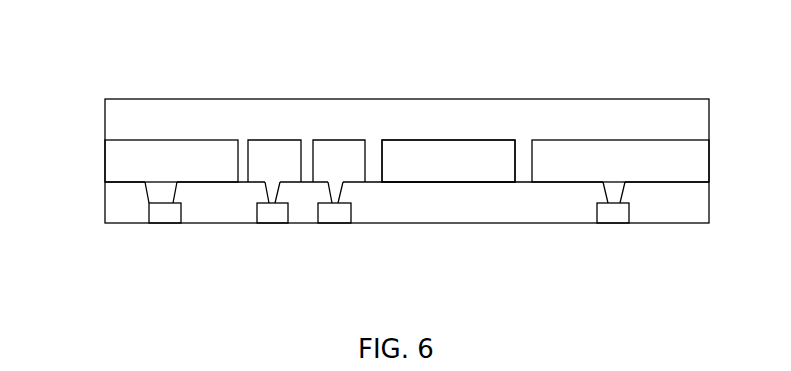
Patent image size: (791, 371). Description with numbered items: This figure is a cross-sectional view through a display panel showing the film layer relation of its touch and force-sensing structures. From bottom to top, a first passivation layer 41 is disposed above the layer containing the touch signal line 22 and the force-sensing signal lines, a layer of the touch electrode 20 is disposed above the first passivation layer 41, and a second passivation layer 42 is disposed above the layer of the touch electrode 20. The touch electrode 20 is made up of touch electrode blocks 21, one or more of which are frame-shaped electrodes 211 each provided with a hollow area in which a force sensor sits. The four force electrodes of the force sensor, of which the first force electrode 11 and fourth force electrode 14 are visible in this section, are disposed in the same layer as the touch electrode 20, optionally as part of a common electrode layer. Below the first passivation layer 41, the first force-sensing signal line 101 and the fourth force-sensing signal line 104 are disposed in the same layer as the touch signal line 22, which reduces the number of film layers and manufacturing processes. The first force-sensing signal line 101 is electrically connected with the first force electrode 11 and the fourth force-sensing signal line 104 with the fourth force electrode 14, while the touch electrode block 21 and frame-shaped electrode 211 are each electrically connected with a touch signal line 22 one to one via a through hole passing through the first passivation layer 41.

The second passivation layer 42 is at (668, 122).
The first passivation layer 41 is at (683, 213).
The touch electrode 20 is at (535, 99).
The frame-shaped electrode 211 is at (125, 165).
The touch electrode block 21 is at (622, 153).
The first force electrode 11 is at (277, 160).
The fourth force electrode 14 is at (340, 160).
The touch signal line 22 is at (157, 208).
The first force-sensing signal line 101 is at (272, 213).
The fourth force-sensing signal line 104 is at (332, 218).